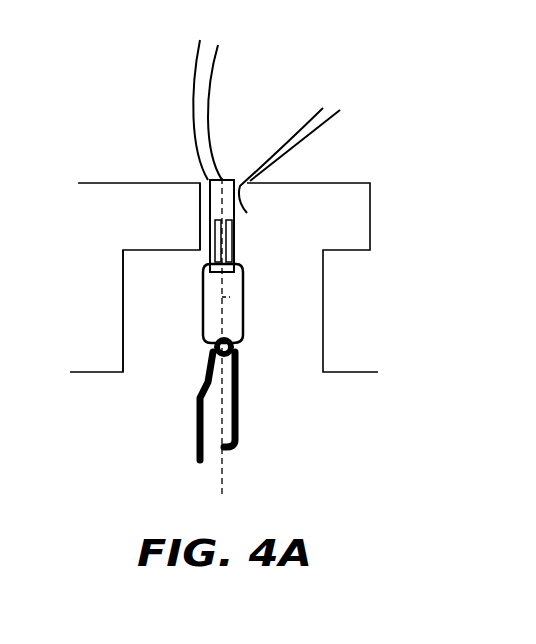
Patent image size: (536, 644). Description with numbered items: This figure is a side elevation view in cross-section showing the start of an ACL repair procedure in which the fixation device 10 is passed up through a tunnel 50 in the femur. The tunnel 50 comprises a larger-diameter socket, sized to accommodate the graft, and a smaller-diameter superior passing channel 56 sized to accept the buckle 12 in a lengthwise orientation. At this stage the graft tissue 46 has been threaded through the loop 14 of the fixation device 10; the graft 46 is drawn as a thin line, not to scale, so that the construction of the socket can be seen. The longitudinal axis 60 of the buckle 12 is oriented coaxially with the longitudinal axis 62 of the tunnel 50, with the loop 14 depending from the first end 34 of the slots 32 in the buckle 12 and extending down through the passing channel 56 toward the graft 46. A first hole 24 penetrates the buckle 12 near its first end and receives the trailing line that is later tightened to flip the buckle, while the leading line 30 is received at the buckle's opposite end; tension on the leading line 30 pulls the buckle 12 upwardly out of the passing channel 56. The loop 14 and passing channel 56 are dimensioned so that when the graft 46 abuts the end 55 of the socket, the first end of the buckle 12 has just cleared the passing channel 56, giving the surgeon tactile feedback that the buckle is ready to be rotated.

The fixation device 10 is at (252, 156).
The buckle 12 is at (222, 178).
The loop 14 is at (247, 316).
The first hole 24 is at (317, 127).
The leading line 30 is at (217, 67).
The slots 32 is at (232, 243).
The first end of the slots 34 is at (237, 258).
The tissue graft 46 is at (237, 412).
The tunnel 50 is at (296, 341).
The end of the socket 55 is at (147, 252).
The passing channel 56 is at (205, 230).
The longitudinal axis of the buckle 60 is at (212, 207).
The longitudinal axis of the tunnel 62 is at (222, 297).